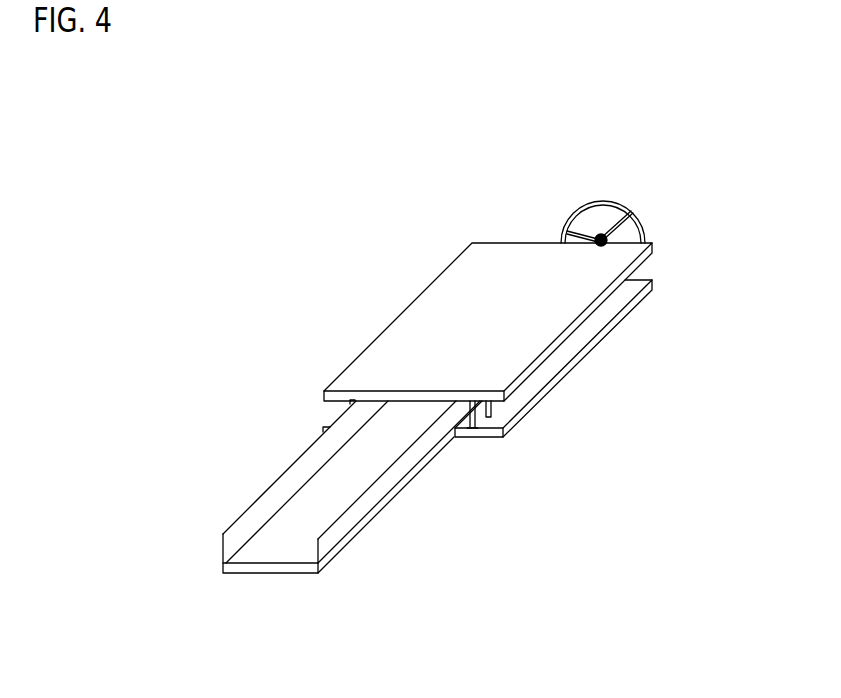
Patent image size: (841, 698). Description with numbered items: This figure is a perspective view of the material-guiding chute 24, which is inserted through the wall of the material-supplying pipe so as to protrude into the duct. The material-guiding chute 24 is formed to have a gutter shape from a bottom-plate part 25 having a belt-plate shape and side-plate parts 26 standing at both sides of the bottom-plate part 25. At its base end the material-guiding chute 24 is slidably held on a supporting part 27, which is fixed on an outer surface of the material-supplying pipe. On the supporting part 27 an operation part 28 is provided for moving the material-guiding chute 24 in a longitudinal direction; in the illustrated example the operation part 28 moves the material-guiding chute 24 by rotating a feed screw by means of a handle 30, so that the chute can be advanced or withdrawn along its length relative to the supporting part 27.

The material-guiding chute 24 is at (321, 527).
The bottom-plate part 25 is at (297, 507).
The side-plate parts 26 is at (243, 517).
The supporting part 27 is at (428, 318).
The operation part 28 is at (494, 252).
The handle 30 is at (568, 170).